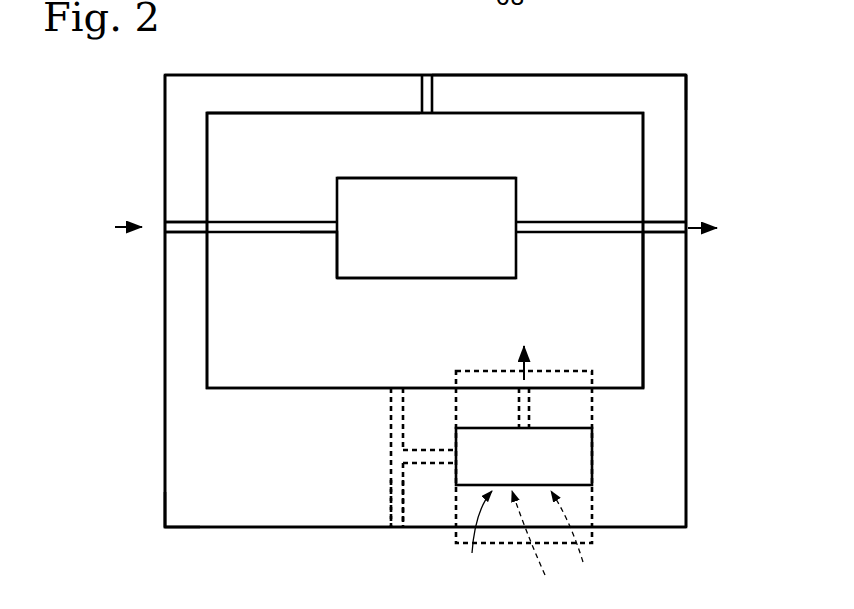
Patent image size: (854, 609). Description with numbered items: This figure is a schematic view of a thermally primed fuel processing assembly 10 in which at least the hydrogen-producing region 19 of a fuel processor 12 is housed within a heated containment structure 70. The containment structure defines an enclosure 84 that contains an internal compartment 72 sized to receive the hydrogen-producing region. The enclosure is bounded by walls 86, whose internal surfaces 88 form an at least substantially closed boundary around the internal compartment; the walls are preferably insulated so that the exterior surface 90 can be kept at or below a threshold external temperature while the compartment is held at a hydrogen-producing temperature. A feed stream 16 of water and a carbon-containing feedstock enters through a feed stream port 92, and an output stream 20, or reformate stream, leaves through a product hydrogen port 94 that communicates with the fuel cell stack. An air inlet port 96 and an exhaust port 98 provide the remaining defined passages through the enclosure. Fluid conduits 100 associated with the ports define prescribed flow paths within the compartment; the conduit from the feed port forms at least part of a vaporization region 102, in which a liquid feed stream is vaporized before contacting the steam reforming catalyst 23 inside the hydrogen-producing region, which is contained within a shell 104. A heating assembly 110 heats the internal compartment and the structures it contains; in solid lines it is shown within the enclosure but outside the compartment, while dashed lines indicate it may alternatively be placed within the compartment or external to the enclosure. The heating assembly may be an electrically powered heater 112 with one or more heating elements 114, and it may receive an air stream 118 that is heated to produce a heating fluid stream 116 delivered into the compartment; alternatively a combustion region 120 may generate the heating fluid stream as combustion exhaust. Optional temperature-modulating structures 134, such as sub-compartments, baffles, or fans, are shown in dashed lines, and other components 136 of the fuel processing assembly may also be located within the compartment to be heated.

The thermally primed fuel processing assembly 10 is at (98, 97).
The fuel processor 12 is at (136, 98).
The feed stream 16 is at (118, 229).
The hydrogen-producing region 19 is at (427, 170).
The output stream 20 is at (700, 230).
The steam reforming catalyst 23 is at (440, 258).
The heated containment structure 70 is at (567, 57).
The internal compartment 72 is at (632, 252).
The enclosure 84 is at (490, 69).
The walls 86 is at (325, 70).
The internal surfaces 88 is at (643, 158).
The exterior surface 90 is at (687, 90).
The feed stream port 92 is at (188, 222).
The product hydrogen port 94 is at (659, 220).
The air inlet port 96 is at (390, 430).
The exhaust port 98 is at (433, 90).
The fluid conduits 100 is at (235, 222).
The vaporization region 102 is at (340, 257).
The shell 104 is at (348, 178).
The heating assembly 110 is at (518, 549).
The electrically powered heater 112 is at (539, 547).
The heating elements 114 is at (505, 450).
The heating fluid stream 116 is at (527, 362).
The air stream 118 is at (405, 505).
The combustion region 120 is at (579, 538).
The temperature-modulating structures 134 is at (625, 368).
The other components of the fuel processing assembly 136 is at (309, 133).